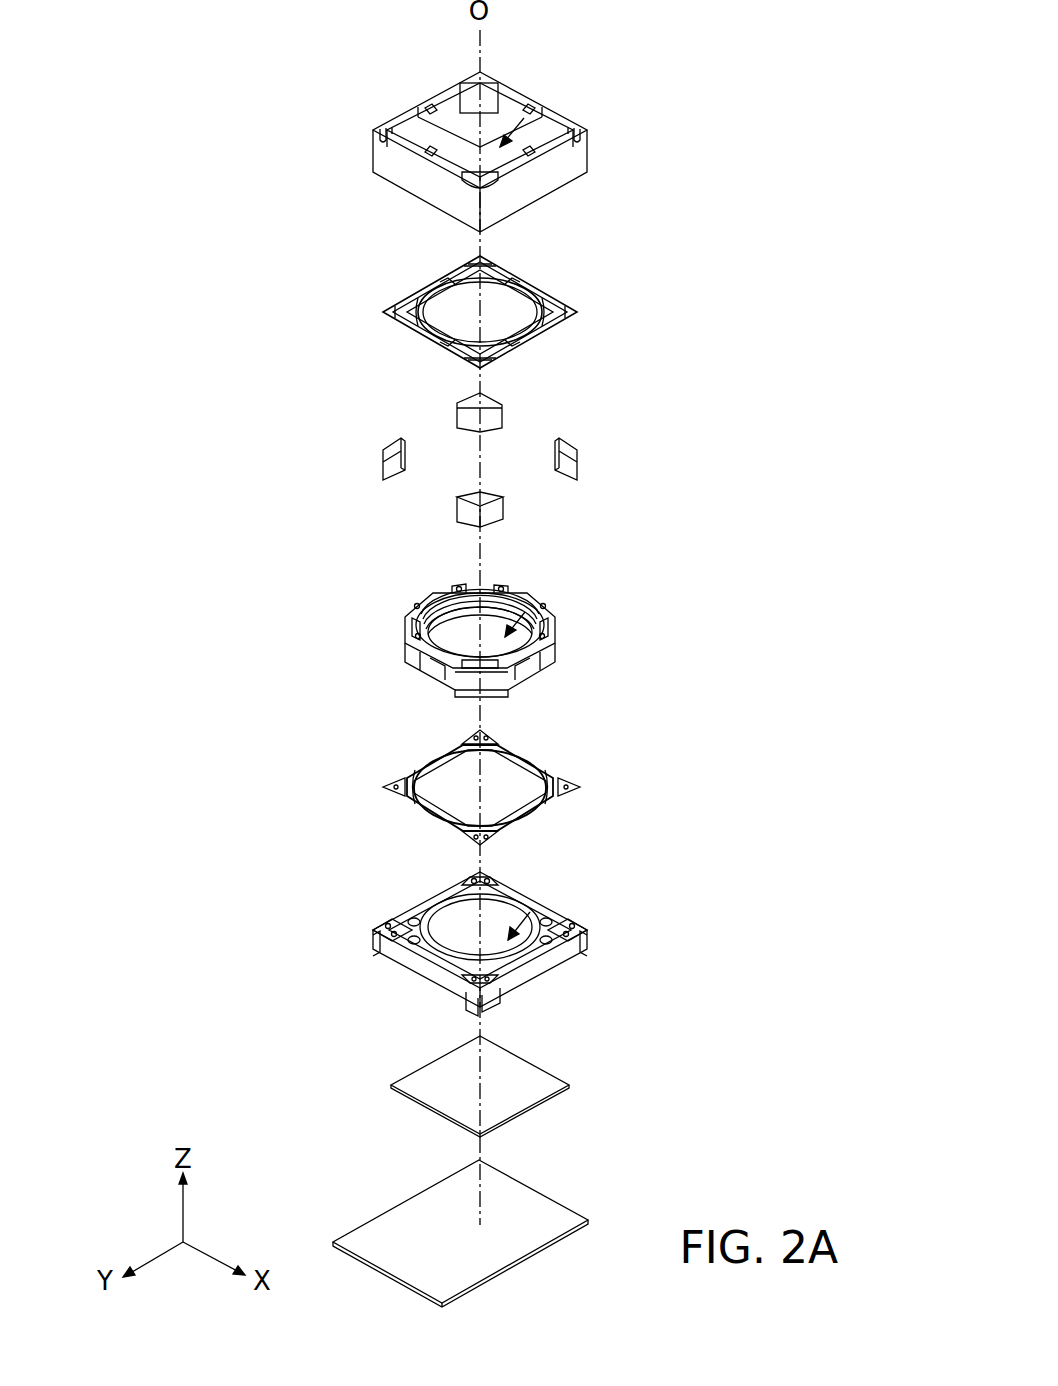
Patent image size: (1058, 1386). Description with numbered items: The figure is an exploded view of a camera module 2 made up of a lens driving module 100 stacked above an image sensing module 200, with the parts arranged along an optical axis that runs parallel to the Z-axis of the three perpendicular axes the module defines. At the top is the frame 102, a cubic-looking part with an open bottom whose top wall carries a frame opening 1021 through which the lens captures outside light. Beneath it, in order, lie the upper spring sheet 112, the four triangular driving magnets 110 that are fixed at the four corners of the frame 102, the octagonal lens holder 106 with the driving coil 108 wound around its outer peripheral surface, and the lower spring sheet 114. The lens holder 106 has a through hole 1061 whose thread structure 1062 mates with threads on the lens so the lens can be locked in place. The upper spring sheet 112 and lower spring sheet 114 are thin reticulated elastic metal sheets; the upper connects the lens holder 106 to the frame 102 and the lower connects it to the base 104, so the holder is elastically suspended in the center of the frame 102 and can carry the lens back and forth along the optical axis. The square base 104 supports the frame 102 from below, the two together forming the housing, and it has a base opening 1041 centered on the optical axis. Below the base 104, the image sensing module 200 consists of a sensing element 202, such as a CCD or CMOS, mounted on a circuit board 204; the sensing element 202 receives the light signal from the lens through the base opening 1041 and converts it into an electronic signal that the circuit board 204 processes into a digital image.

The camera module 2 is at (191, 25).
The lens driving module 100 is at (166, 705).
The frame 102 is at (413, 177).
The frame opening 1021 is at (524, 118).
The base 104 is at (404, 915).
The base opening 1041 is at (530, 912).
The lens holder 106 is at (534, 684).
The through hole 1061 is at (525, 612).
The thread structure 1062 is at (430, 601).
The driving coil 108 is at (442, 675).
The driving magnets 110 is at (488, 402).
The upper spring sheet 112 is at (384, 312).
The lower spring sheet 114 is at (381, 789).
The image sensing module 200 is at (166, 992).
The sensing element 202 is at (430, 1081).
The circuit board 204 is at (383, 1231).